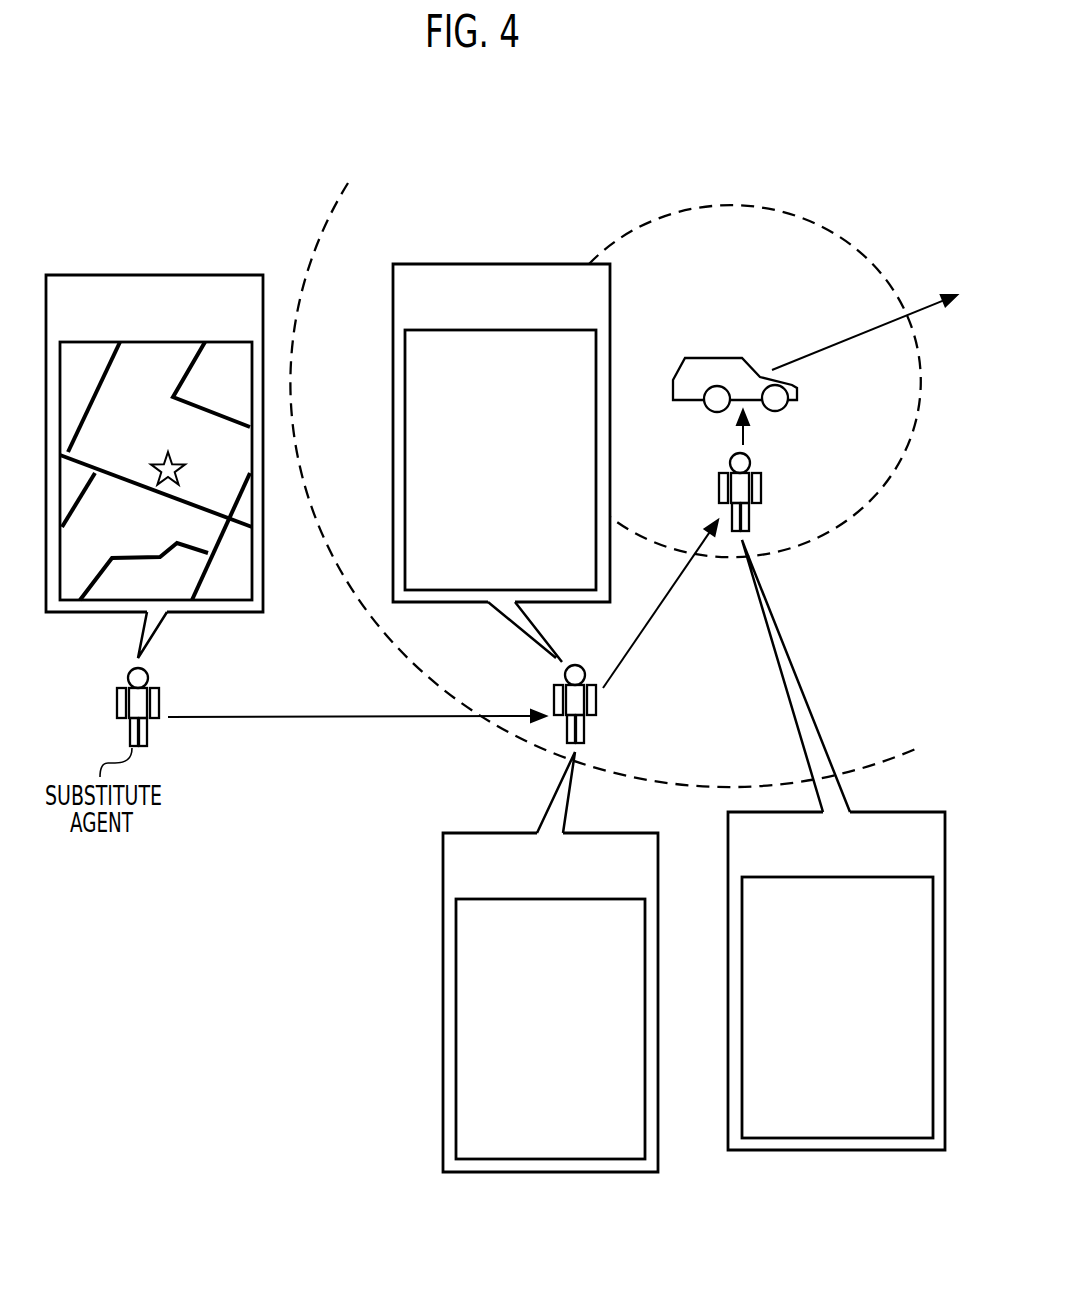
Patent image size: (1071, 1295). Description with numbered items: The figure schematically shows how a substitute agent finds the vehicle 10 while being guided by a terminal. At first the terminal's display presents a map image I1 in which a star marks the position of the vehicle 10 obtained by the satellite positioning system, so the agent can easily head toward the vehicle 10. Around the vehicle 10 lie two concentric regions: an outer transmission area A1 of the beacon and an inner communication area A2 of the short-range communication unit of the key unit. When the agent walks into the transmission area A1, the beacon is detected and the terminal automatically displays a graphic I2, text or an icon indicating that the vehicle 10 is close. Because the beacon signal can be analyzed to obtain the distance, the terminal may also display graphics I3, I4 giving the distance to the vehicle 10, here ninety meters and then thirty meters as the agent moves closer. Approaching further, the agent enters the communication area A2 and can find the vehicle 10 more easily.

The map image I1 is at (157, 341).
The graphic indicating that the vehicle is close I2 is at (500, 329).
The graphic indicating the distance to the vehicle I3 is at (552, 898).
The graphic indicating the distance to the vehicle I4 is at (837, 876).
The vehicle 10 is at (723, 358).
The transmission area A1 is at (605, 485).
The communication area A2 is at (755, 381).